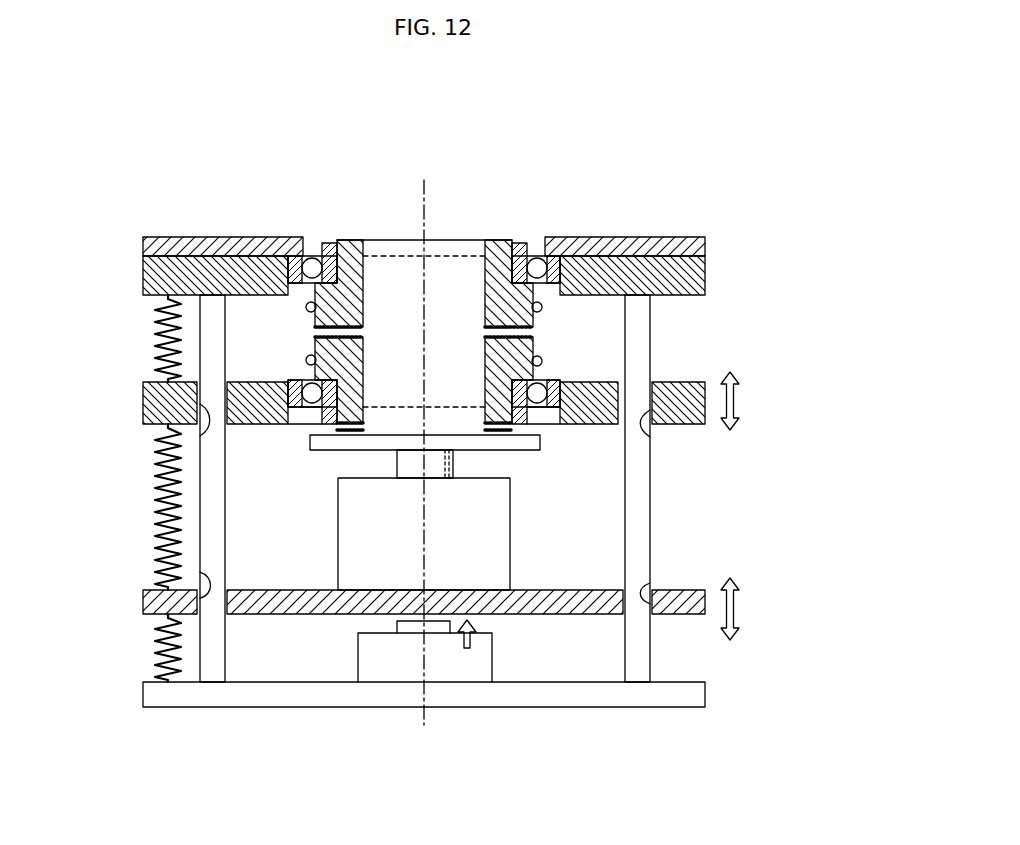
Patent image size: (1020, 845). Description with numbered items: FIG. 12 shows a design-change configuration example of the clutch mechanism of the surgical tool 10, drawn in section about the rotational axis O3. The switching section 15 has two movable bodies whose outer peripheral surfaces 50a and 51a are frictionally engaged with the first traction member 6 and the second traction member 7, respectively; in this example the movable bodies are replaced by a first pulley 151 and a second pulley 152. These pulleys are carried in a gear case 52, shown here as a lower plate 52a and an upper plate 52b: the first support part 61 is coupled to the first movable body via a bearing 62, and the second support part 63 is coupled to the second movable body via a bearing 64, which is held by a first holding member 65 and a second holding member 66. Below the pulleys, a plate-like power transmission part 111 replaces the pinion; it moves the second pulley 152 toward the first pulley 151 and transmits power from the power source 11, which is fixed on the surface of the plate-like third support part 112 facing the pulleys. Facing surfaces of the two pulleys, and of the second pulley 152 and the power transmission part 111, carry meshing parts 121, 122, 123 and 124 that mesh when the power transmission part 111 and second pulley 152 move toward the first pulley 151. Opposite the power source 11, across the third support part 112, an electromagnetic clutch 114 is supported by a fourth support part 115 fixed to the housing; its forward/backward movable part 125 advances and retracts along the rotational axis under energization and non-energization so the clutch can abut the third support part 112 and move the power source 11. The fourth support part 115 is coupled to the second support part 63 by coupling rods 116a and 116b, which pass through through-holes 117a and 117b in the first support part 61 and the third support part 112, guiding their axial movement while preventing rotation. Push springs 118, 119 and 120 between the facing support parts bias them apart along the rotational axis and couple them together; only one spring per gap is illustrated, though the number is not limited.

The rotary device 10 is at (656, 174).
The rotation axis O3 is at (426, 180).
The power source 11 is at (512, 540).
The switching section 15 is at (585, 475).
The first traction member 6 is at (306, 361).
The second traction member 7 is at (306, 309).
The outer peripheral surface 50a is at (535, 376).
The outer peripheral surface 51a is at (586, 292).
The gear case 52 is at (494, 313).
The lower plate 52a is at (692, 423).
The upper plate 52b is at (491, 231).
The first support part 61 is at (313, 425).
The bearing 62 is at (316, 372).
The second support part 63 is at (578, 292).
The bearing 64 is at (553, 255).
The first holding member 65 is at (595, 238).
The second holding member 66 is at (518, 240).
The power transmission part 111 is at (310, 440).
The third support part 112 is at (147, 600).
The electromagnetic clutch 114 is at (492, 655).
The fourth support part 115 is at (687, 705).
The coupling rod 116a is at (650, 652).
The coupling rod 116b is at (223, 655).
The through-hole 117a is at (650, 437).
The through-hole 117b is at (200, 433).
The push spring 118 is at (157, 330).
The push spring 119 is at (157, 512).
The push spring 120 is at (157, 655).
The meshing part 121 is at (377, 239).
The meshing part 122 is at (316, 333).
The meshing part 123 is at (527, 421).
The meshing part 124 is at (507, 434).
The forward/backward movable part 125 is at (396, 625).
The first pulley 151 is at (487, 240).
The second pulley 152 is at (520, 348).